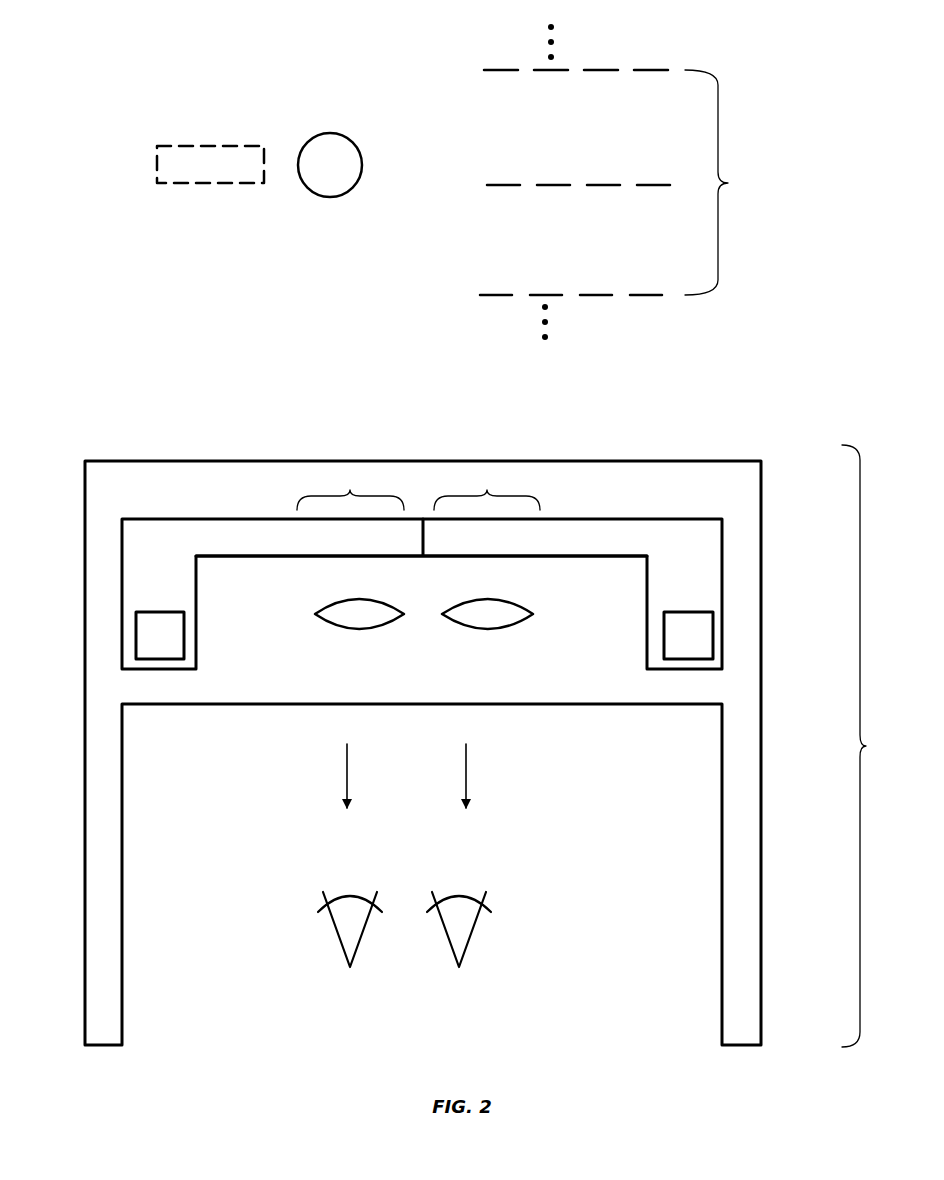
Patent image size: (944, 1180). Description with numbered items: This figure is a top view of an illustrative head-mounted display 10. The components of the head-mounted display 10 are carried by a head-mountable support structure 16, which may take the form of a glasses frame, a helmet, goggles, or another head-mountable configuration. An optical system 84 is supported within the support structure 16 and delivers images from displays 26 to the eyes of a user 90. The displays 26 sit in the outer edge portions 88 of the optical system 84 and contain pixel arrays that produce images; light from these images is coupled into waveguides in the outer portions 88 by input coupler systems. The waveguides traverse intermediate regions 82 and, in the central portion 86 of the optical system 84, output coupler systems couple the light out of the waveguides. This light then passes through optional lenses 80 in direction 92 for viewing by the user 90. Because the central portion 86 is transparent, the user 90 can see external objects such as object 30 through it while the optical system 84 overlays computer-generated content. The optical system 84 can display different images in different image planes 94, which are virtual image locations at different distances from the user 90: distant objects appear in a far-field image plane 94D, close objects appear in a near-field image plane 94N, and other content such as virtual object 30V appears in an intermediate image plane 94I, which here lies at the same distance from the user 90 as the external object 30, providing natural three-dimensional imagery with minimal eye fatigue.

The head-mounted display 10 is at (870, 746).
The support structure 16 is at (98, 848).
The displays 26 is at (136, 635).
The object 30 is at (330, 197).
The virtual object 30V is at (190, 183).
The lenses 80 is at (358, 629).
The intermediate regions 82 is at (243, 557).
The optical system 84 is at (196, 494).
The central portion 86 is at (350, 490).
The outer portions 88 is at (110, 496).
The user 90 is at (365, 930).
The direction 92 is at (347, 780).
The image planes 94 is at (650, 182).
The far-field image plane 94D is at (595, 70).
The intermediate image plane 94I is at (498, 185).
The near-field image plane 94N is at (496, 295).